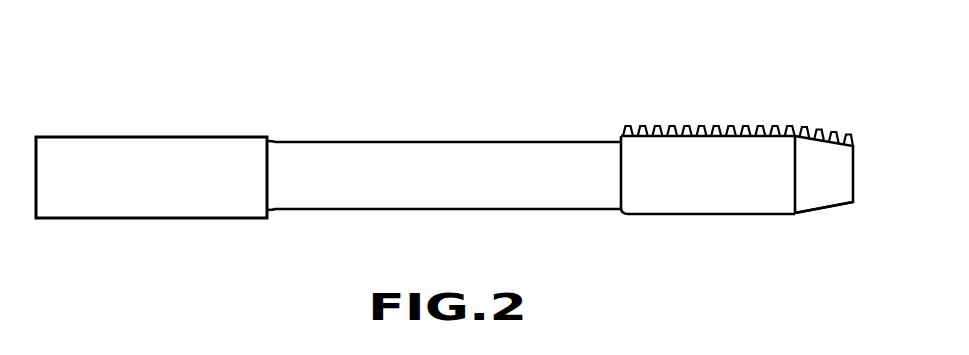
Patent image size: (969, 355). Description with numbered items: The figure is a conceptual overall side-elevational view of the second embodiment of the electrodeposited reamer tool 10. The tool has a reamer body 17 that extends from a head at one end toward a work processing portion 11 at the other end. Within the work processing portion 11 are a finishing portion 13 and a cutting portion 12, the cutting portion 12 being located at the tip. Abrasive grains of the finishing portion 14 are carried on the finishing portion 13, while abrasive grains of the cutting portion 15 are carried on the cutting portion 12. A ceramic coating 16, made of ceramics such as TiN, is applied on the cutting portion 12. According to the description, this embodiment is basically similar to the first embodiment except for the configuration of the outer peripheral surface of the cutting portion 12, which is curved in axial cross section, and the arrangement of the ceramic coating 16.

The electrodeposited reamer tool 10 is at (345, 114).
The work processing portion 11 is at (766, 180).
The cutting portion 12 is at (843, 170).
The finishing portion 13 is at (708, 162).
The abrasive grains of the finishing portion 14 is at (676, 125).
The abrasive grains of the cutting portion 15 is at (848, 134).
The ceramic coating 16 is at (824, 230).
The reamer body 17 is at (458, 139).